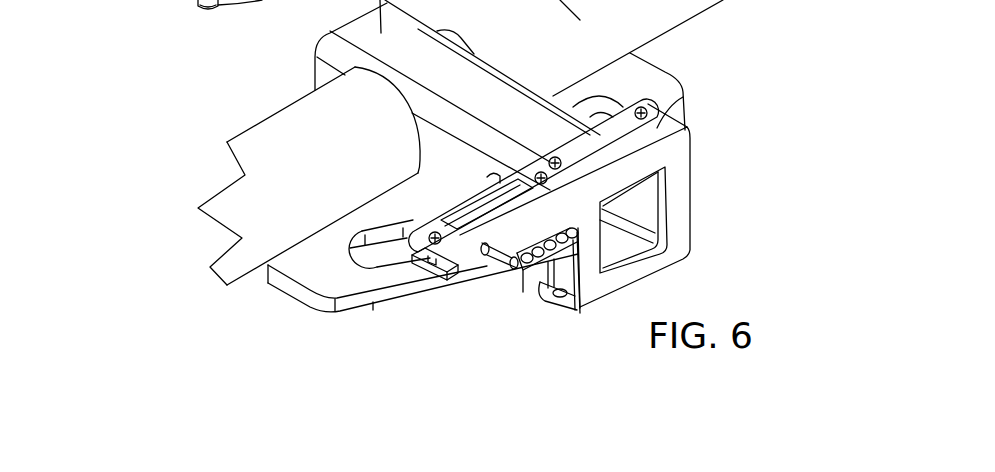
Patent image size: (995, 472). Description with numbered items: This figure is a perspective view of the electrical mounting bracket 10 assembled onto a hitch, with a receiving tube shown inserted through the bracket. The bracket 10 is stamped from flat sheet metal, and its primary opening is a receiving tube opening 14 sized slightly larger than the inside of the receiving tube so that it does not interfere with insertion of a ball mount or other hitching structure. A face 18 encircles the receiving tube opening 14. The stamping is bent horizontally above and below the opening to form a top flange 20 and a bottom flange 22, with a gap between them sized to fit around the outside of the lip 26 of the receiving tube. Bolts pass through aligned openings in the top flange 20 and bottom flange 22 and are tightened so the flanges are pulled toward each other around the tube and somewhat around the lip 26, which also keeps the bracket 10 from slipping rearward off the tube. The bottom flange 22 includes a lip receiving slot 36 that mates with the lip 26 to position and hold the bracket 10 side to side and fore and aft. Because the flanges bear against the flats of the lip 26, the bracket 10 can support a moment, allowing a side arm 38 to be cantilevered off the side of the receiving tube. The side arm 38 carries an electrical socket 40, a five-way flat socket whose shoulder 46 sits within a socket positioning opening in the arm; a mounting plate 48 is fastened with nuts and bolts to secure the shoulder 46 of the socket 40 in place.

The electrical mounting bracket 10 is at (145, 175).
The receiving tube opening 14 is at (637, 198).
The face 18 is at (682, 210).
The top flange 20 is at (683, 97).
The bottom flange 22 is at (547, 293).
The lip 26 is at (540, 265).
The lip receiving slot 36 is at (657, 252).
The side arm 38 is at (405, 219).
The electrical socket 40 is at (497, 263).
The shoulder 46 is at (462, 248).
The mounting plate 48 is at (430, 274).